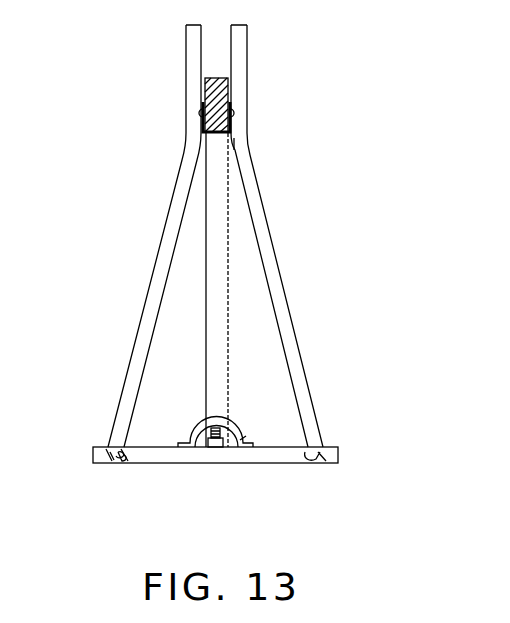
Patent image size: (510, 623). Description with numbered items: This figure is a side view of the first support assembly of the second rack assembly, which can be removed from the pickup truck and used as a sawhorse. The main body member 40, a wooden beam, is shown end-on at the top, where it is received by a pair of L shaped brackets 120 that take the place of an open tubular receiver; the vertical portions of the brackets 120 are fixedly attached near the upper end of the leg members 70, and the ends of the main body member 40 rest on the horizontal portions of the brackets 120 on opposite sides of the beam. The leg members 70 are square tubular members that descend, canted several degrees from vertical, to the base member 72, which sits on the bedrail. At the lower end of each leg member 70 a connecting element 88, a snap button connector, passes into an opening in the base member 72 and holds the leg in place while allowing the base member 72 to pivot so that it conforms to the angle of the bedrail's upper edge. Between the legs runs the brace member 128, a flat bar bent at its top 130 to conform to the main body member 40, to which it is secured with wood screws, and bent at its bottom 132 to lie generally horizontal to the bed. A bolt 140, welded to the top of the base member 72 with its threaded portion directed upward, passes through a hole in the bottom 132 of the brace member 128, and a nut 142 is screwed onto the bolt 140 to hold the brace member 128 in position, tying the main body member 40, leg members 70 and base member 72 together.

The main body member 40 is at (228, 92).
The leg members 70 is at (283, 317).
The base member 72 is at (282, 457).
The connecting element 88 is at (130, 457).
The L shaped brackets 120 is at (203, 124).
The brace member 128 is at (205, 310).
The top of brace member 130 is at (238, 148).
The bottom of brace member 132 is at (247, 433).
The bolt 140 is at (222, 427).
The nut 142 is at (218, 447).